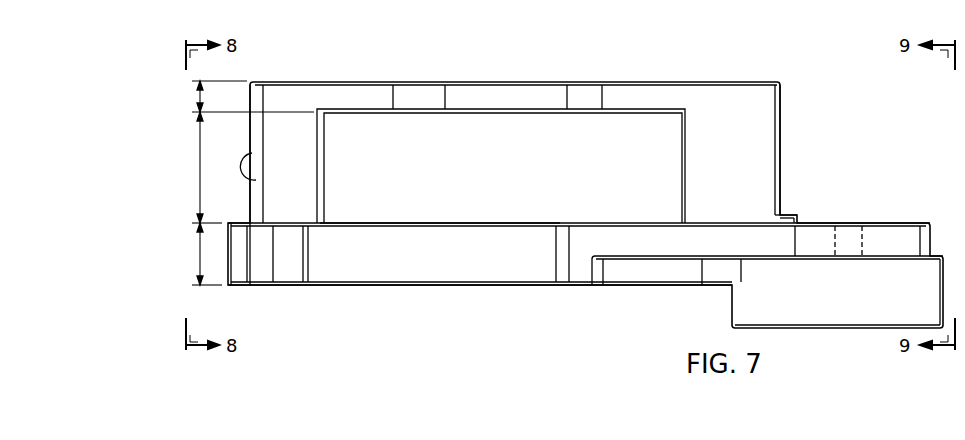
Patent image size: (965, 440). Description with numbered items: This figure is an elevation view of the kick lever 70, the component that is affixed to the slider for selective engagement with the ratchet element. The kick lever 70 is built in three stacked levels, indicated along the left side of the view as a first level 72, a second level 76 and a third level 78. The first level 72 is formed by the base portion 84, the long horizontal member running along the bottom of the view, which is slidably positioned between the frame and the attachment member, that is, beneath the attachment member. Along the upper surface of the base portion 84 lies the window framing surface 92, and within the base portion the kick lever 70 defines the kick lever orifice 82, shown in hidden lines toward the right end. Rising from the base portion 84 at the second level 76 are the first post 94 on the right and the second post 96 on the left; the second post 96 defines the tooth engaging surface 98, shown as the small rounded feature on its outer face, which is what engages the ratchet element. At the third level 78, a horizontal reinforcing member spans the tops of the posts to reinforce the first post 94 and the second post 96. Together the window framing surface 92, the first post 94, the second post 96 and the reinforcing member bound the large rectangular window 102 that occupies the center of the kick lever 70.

The kick lever 70 is at (826, 73).
The first level 72 is at (199, 255).
The second level 76 is at (199, 168).
The third level 78 is at (194, 92).
The kick lever orifice 82 is at (859, 233).
The base portion 84 is at (431, 262).
The window framing surface 92 is at (441, 221).
The first post 94 is at (730, 105).
The second post 96 is at (297, 127).
The tooth engaging surface 98 is at (257, 179).
The window 102 is at (501, 166).